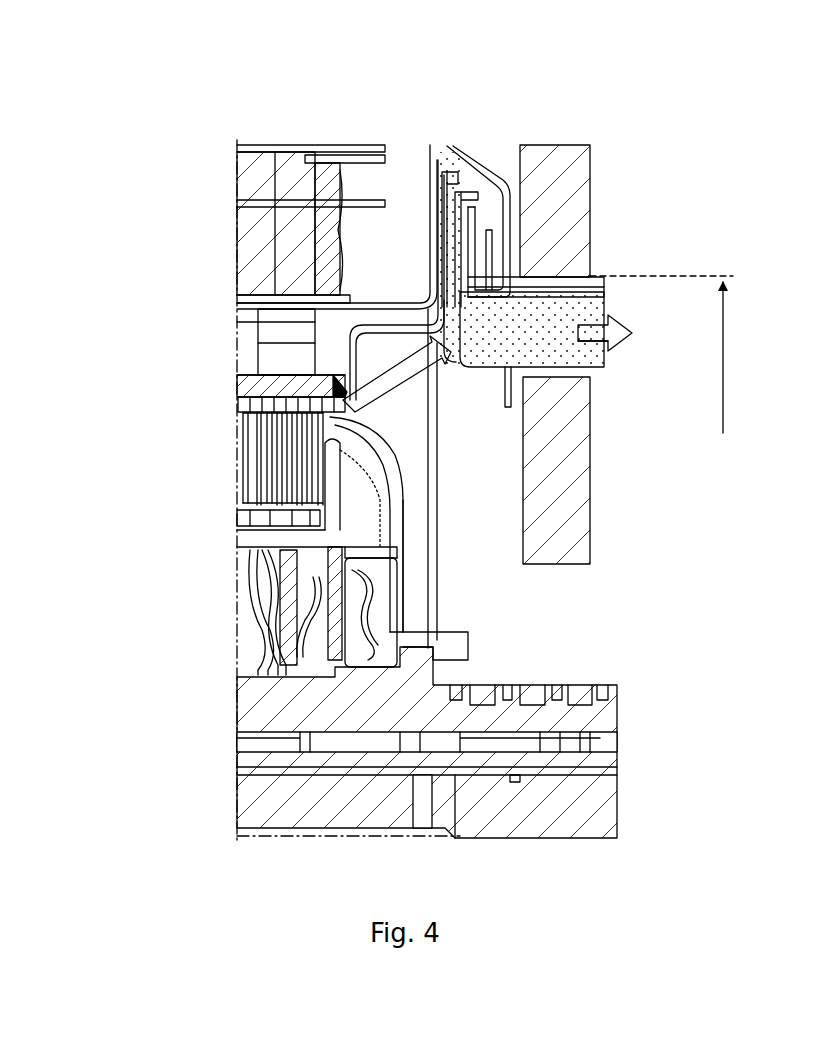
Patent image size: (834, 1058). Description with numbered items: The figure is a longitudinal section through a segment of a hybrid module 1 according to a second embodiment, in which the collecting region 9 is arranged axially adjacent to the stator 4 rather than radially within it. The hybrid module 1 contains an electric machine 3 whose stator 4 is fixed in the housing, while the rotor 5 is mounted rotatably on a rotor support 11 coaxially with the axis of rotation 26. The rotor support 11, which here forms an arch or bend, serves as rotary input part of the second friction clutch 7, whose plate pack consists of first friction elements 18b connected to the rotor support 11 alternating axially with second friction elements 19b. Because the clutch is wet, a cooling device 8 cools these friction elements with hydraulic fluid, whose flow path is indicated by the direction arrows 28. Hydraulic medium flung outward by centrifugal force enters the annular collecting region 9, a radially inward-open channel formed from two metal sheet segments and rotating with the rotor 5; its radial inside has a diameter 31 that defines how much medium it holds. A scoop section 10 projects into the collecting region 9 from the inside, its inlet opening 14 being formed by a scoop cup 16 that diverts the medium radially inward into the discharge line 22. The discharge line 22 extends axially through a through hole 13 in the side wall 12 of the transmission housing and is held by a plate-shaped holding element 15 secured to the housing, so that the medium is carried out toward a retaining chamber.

The hybrid module 1 is at (238, 133).
The electric machine 3 is at (225, 160).
The stator 4 is at (258, 237).
The rotor 5 is at (262, 322).
The second friction clutch 7 is at (227, 460).
The cooling device 8 is at (420, 198).
The collecting region 9 is at (492, 225).
The scoop section 10 is at (490, 368).
The rotor support 11 is at (250, 382).
The side wall 12 is at (565, 478).
The through hole 13 is at (600, 378).
The inlet opening 14 is at (475, 210).
The holding element 15 is at (522, 180).
The scoop cup 16 is at (453, 222).
The first friction elements 18b is at (260, 547).
The second friction elements 19b is at (256, 449).
The discharge line 22 is at (590, 305).
The axis of rotation 26 is at (540, 838).
The direction arrows 28 is at (408, 372).
The diameter 31 is at (723, 403).